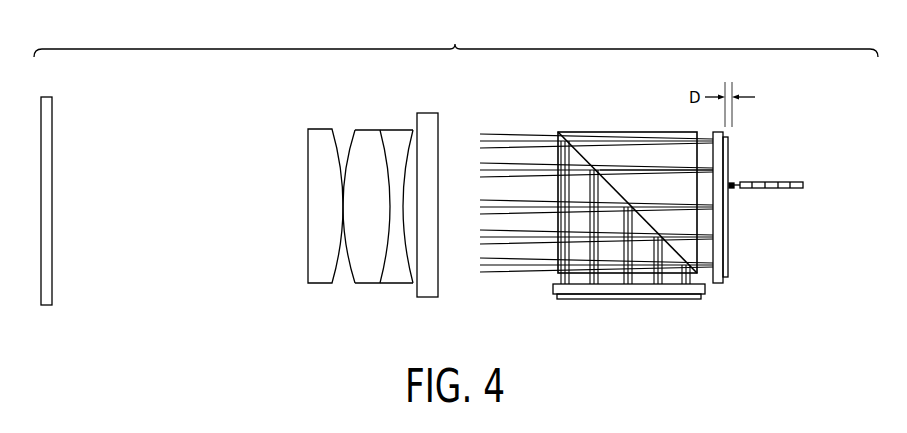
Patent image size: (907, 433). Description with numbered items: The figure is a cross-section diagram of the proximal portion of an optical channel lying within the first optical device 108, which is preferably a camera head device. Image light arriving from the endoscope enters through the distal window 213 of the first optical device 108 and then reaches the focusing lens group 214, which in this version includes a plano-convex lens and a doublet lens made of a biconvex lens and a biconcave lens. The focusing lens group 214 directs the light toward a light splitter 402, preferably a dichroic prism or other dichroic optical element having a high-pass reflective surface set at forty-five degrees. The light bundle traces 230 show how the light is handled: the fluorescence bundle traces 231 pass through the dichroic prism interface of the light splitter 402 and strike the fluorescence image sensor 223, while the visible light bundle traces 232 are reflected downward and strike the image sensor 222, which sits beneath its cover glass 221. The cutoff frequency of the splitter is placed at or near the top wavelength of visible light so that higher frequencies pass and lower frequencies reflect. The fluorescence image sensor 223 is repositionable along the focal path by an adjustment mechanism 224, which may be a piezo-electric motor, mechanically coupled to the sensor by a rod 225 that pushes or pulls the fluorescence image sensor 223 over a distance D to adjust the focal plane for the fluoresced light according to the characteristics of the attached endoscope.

The first optical device 108 is at (456, 39).
The distal window 213 is at (52, 97).
The focusing lens group 214 is at (351, 108).
The light bundle traces 230 is at (529, 128).
The light splitter 402 is at (609, 120).
The cover glass 221 is at (713, 131).
The fluorescence bundle traces 231 is at (641, 172).
The visible light bundle traces 232 is at (628, 253).
The fluorescence image sensor 223 is at (728, 252).
The image sensor 222 is at (590, 300).
The adjustment mechanism 224 is at (803, 185).
The rod 225 is at (733, 189).